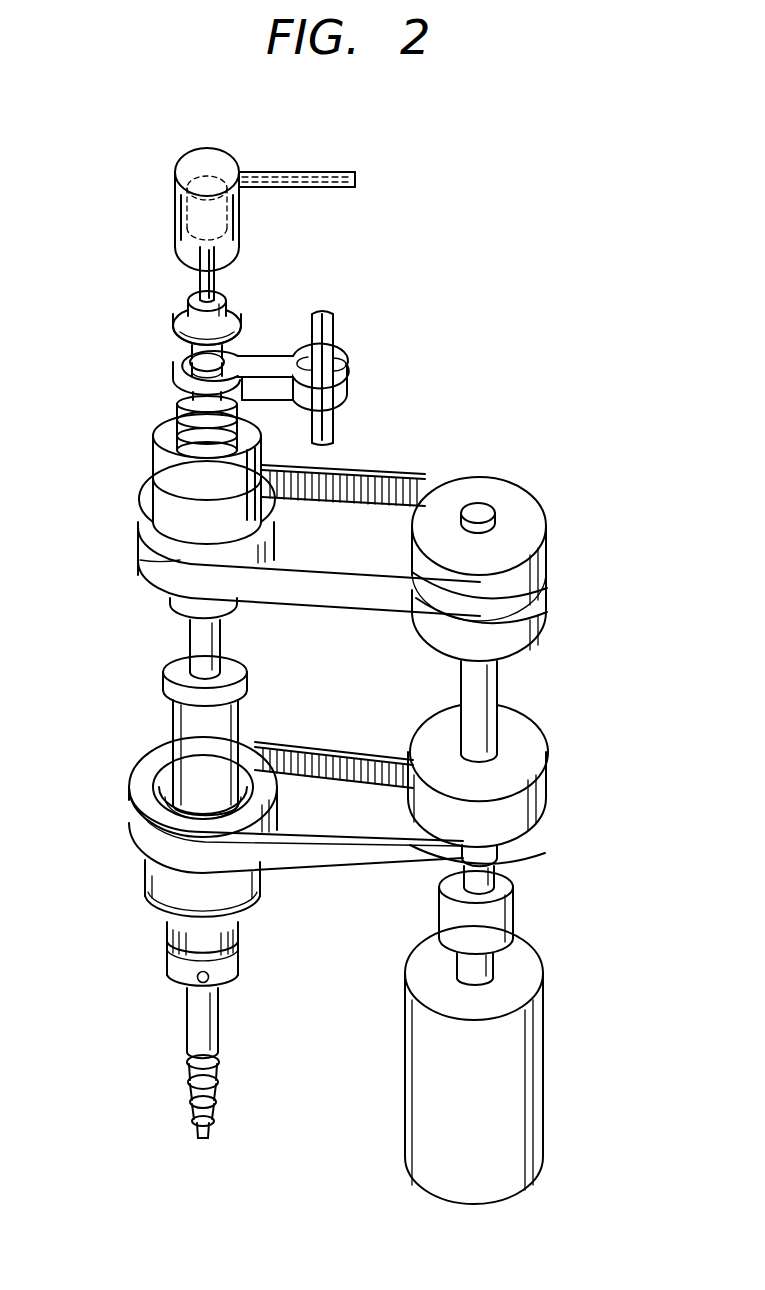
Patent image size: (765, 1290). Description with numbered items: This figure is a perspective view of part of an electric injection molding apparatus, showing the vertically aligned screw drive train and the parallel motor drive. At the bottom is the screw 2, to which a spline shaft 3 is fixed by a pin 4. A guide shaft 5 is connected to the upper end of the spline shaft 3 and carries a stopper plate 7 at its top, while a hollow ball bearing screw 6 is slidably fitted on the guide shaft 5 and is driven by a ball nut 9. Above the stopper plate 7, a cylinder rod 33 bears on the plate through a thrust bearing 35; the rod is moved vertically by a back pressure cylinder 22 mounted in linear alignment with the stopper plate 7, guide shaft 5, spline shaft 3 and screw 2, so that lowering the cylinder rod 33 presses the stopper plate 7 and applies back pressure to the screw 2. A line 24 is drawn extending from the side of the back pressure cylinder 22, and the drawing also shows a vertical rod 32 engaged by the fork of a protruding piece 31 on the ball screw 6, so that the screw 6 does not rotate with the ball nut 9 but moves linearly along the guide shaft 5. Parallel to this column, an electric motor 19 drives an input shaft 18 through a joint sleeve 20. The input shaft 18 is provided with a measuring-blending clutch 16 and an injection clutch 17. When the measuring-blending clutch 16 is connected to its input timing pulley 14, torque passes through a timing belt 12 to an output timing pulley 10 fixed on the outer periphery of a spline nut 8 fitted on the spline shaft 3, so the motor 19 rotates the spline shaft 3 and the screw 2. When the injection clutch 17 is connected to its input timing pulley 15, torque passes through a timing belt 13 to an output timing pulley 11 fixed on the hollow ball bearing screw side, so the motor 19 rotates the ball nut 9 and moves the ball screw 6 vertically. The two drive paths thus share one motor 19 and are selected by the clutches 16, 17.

The screw 2 is at (190, 1025).
The spline shaft 3 is at (192, 740).
The pin 4 is at (187, 966).
The guide shaft 5 is at (190, 636).
The hollow ball bearing screw 6 is at (178, 422).
The stopper plate 7 is at (233, 300).
The spline nut 8 is at (188, 815).
The ball nut 9 is at (165, 447).
The output timing pulley 10 is at (140, 787).
The output timing pulley 11 is at (150, 522).
The timing belt 12 is at (341, 852).
The timing belt 13 is at (375, 478).
The input timing pulley 14 is at (495, 862).
The input timing pulley 15 is at (535, 518).
The measuring-blending clutch 16 is at (545, 792).
The injection clutch 17 is at (540, 612).
The input shaft 18 is at (482, 682).
The electric motor 19 is at (525, 1035).
The joint sleeve 20 is at (505, 912).
The back pressure cylinder 22 is at (175, 196).
The supply line 24 is at (336, 172).
The protruding piece 31 is at (345, 357).
The guide pin 32 is at (327, 312).
The cylinder rod 33 is at (205, 265).
The thrust bearing 35 is at (195, 310).